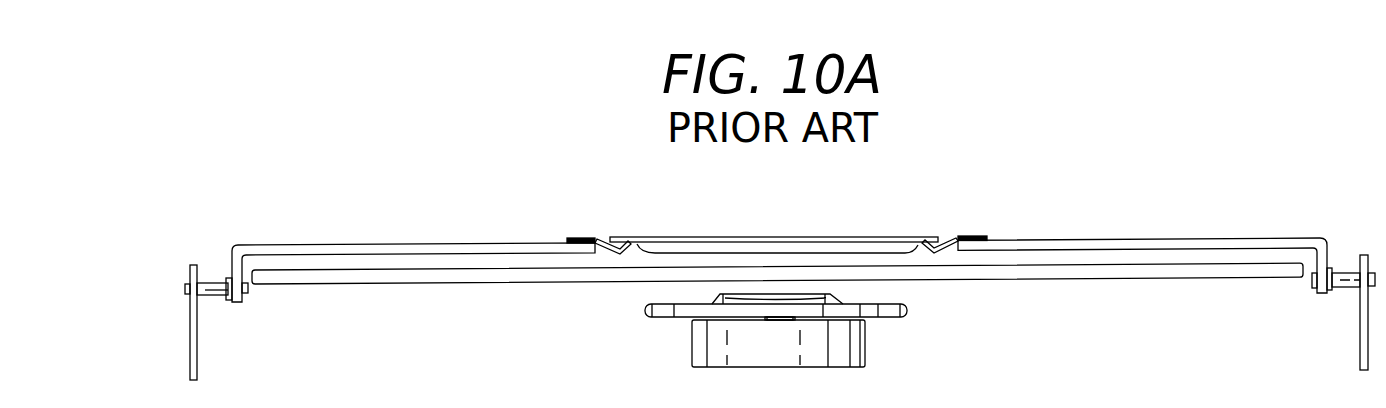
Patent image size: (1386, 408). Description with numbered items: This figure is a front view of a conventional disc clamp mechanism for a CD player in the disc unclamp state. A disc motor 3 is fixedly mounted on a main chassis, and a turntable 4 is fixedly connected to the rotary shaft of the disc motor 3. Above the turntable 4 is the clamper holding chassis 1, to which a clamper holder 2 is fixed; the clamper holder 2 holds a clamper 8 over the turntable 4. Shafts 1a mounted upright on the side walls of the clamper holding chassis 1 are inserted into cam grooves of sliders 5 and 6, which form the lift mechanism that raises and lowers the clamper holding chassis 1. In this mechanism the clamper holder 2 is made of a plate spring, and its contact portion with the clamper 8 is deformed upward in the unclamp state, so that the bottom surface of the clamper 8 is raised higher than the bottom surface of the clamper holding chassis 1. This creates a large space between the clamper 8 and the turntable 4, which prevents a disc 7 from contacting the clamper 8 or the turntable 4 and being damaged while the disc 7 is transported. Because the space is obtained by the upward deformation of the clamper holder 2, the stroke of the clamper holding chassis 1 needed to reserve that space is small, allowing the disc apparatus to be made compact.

The clamper holding chassis 1 is at (434, 245).
The shaft 1a is at (210, 283).
The clamper holder 2 is at (603, 242).
The disc motor 3 is at (858, 342).
The turntable 4 is at (907, 307).
The slider 5 is at (198, 350).
The slider 6 is at (1362, 352).
The disc 7 is at (537, 283).
The clamper 8 is at (858, 237).